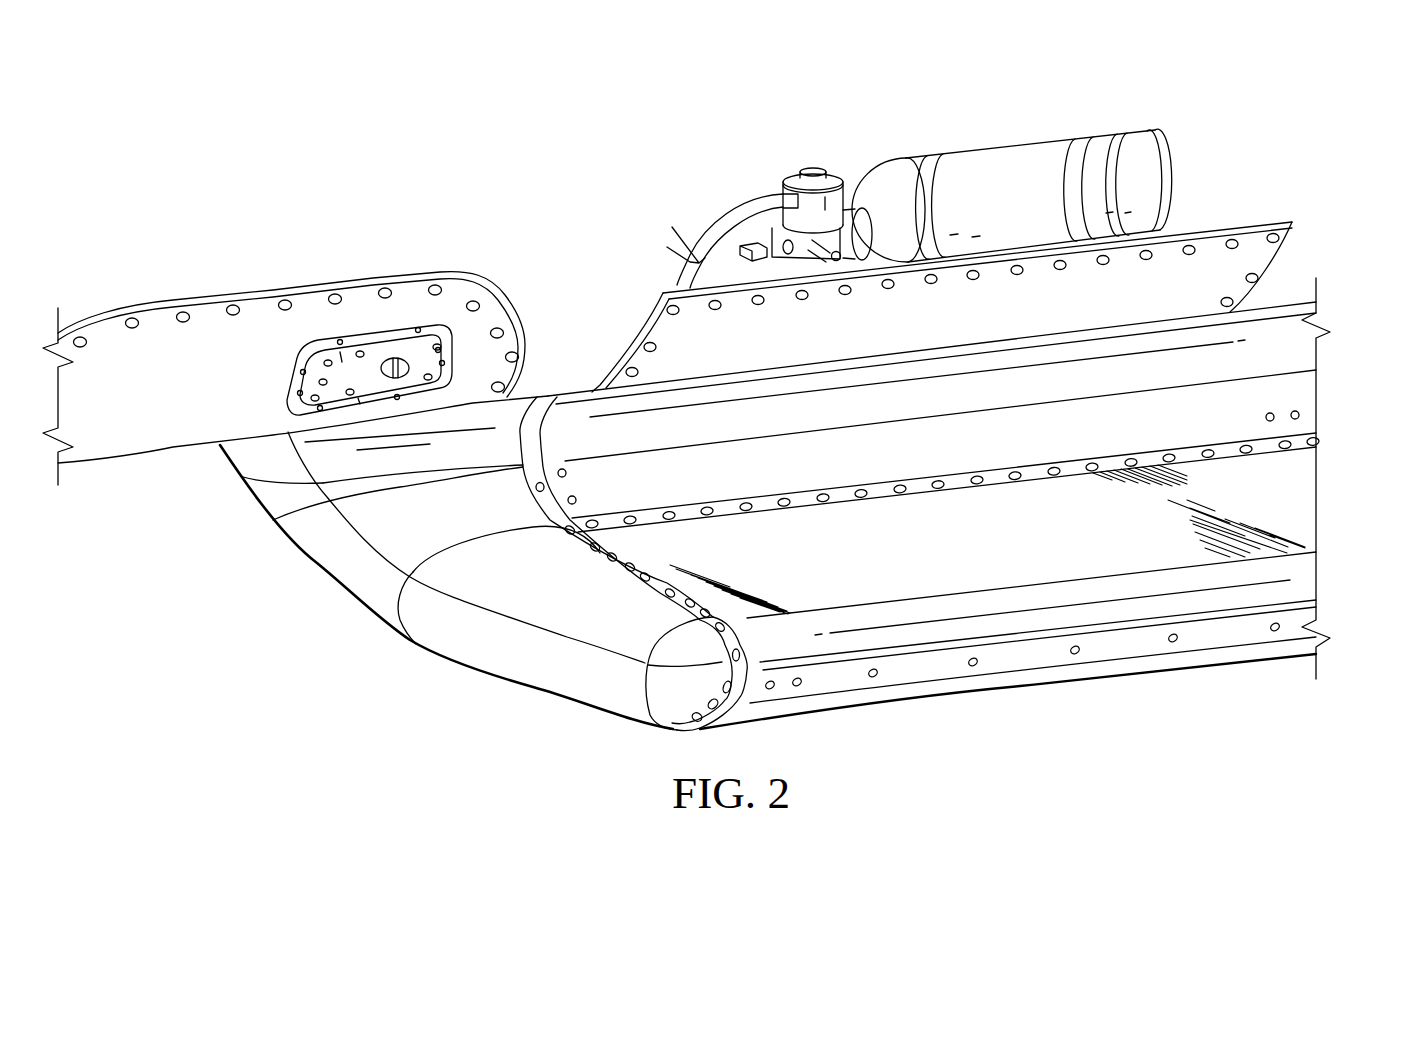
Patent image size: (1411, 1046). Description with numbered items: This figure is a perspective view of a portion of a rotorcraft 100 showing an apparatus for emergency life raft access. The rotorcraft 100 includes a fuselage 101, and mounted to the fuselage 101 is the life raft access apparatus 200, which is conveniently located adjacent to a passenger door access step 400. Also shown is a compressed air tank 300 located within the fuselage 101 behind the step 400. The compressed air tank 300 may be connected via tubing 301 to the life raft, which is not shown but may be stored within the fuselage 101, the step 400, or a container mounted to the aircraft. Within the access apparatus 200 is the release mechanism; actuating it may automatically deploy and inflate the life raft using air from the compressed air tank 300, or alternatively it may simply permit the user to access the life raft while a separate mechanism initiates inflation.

The rotorcraft 100 is at (436, 733).
The fuselage 101 is at (210, 315).
The life raft access apparatus 200 is at (373, 328).
The compressed air tank 300 is at (1003, 148).
The tubing 301 is at (670, 233).
The passenger door access step 400 is at (1308, 502).